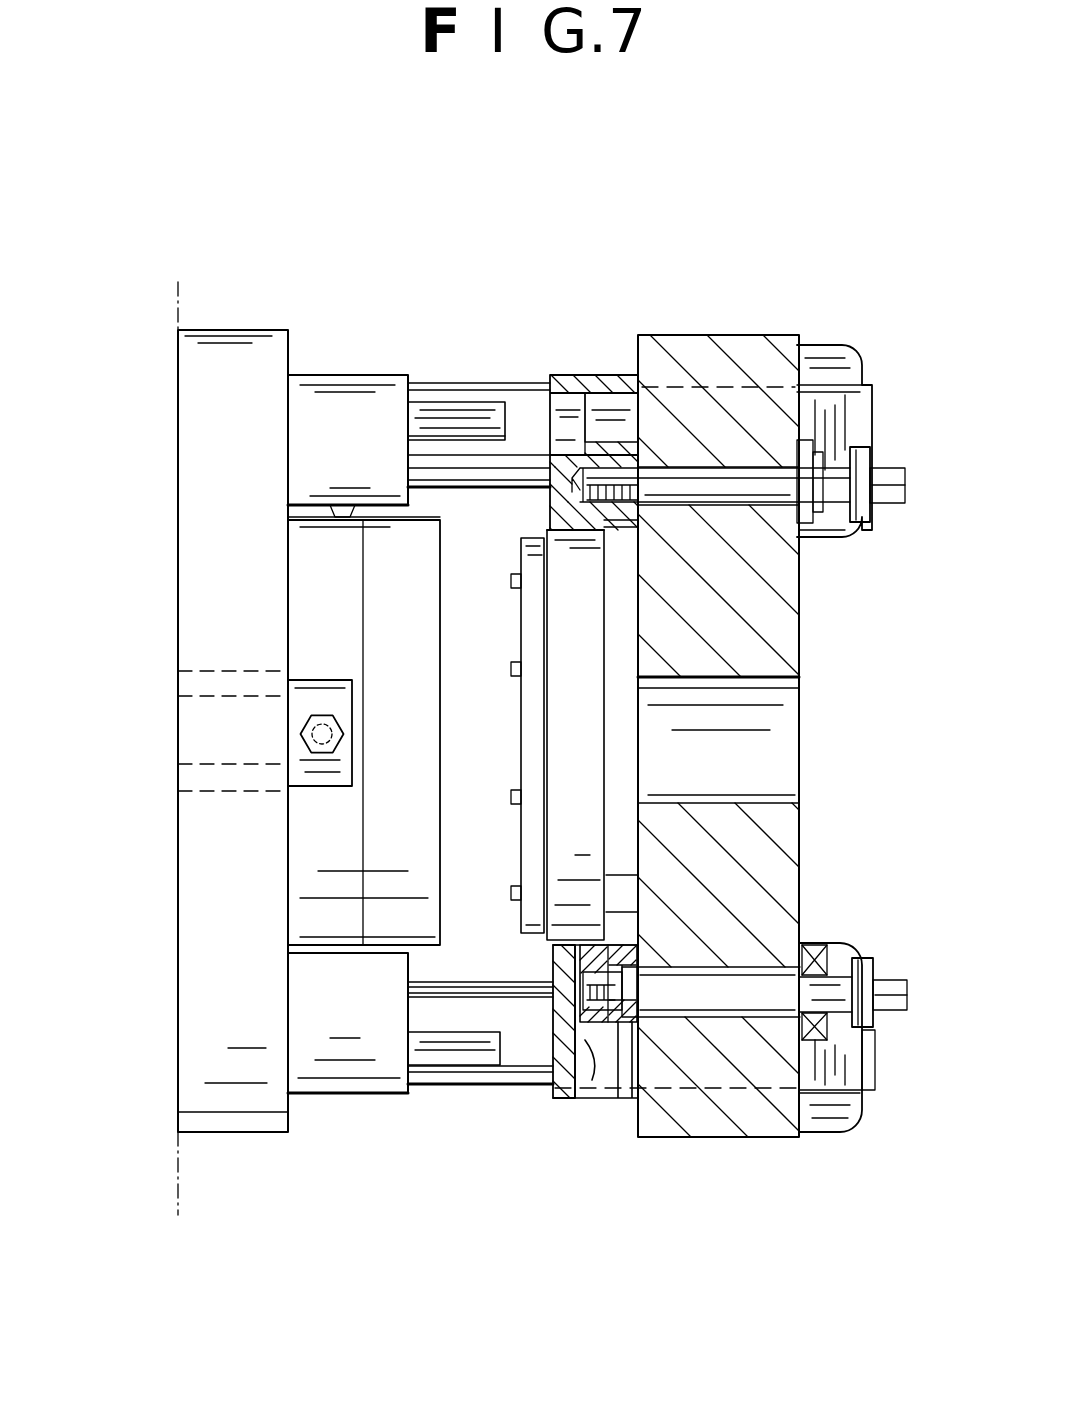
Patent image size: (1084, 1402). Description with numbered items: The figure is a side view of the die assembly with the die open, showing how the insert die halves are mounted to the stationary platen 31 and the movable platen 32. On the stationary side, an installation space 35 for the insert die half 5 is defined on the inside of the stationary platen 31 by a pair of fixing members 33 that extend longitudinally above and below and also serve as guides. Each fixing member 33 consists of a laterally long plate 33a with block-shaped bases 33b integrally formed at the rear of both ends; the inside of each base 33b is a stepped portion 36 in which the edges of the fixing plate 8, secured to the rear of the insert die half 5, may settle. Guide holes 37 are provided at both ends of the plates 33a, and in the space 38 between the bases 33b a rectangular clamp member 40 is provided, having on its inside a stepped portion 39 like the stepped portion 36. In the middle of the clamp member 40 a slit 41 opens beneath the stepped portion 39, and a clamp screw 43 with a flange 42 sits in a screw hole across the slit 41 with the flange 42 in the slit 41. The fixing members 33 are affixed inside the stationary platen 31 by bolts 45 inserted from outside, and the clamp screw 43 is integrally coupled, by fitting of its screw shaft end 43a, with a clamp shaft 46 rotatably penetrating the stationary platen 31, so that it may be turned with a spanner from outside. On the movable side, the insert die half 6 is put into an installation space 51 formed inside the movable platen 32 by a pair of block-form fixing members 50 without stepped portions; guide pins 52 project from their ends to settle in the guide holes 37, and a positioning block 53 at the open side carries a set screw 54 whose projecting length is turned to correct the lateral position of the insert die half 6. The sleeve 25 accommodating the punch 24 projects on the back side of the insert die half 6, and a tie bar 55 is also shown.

The insert die half 5 is at (537, 722).
The insert die half 6 is at (402, 714).
The fixing plate 8 is at (622, 668).
The punch 24 is at (213, 729).
The sleeve 25 is at (205, 668).
The stationary platen 31 is at (722, 352).
The movable platen 32 is at (236, 357).
The fixing member 33 is at (612, 378).
The laterally long plate 33a is at (550, 1060).
The base 33b is at (575, 515).
The installation space 35 is at (588, 542).
The stepped portion 36 is at (605, 520).
The guide hole 37 is at (560, 385).
The space 38 is at (587, 1058).
The stepped portion 39 is at (617, 935).
The clamp member 40 is at (590, 945).
The slit 41 is at (617, 1100).
The flange 42 is at (628, 1020).
The clamp screw 43 is at (575, 995).
The screw shaft end 43a is at (668, 1032).
The bolt 45 is at (732, 488).
The clamp shaft 46 is at (763, 993).
The fixing member 50 is at (340, 395).
The installation space 51 is at (300, 510).
The guide pin 52 is at (432, 412).
The positioning block 53 is at (322, 698).
The set screw 54 is at (327, 752).
The tie bar 55 is at (482, 390).